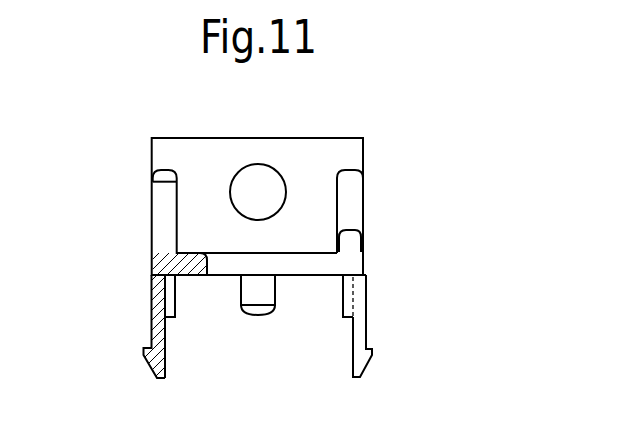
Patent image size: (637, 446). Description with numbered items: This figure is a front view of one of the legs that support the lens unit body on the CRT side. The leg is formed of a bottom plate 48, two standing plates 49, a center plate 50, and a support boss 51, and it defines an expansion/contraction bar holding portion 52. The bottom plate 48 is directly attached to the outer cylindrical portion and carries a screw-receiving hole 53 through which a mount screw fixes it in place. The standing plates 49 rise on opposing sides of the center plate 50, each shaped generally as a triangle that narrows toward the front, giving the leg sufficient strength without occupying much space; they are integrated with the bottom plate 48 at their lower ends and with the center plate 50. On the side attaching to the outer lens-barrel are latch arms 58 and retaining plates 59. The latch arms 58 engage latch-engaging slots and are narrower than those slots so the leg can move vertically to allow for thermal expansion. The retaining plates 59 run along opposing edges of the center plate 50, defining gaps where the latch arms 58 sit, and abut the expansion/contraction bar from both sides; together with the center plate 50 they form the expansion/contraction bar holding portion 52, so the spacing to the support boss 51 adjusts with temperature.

The bottom plate 48 is at (313, 157).
The standing plate 49 is at (151, 198).
The center plate 50 is at (313, 249).
The support boss 51 is at (265, 304).
The expansion/contraction bar holding portion 52 is at (300, 297).
The screw-receiving hole 53 is at (247, 177).
The latch arm 58 is at (150, 371).
The retaining plate 59 is at (175, 310).